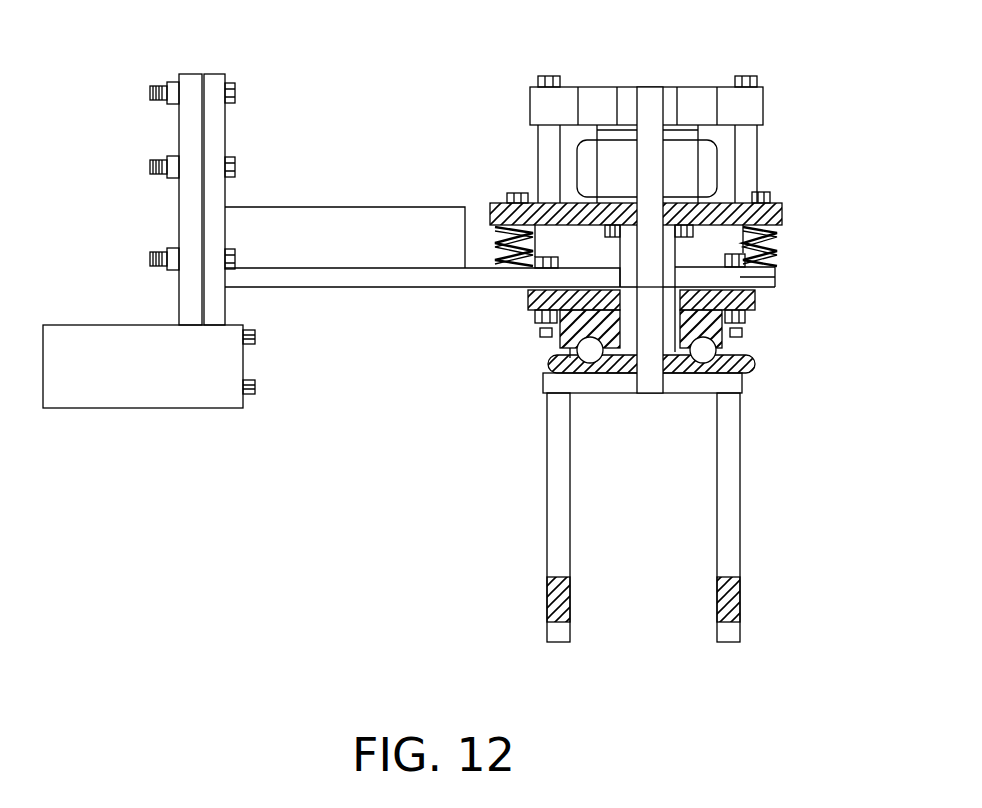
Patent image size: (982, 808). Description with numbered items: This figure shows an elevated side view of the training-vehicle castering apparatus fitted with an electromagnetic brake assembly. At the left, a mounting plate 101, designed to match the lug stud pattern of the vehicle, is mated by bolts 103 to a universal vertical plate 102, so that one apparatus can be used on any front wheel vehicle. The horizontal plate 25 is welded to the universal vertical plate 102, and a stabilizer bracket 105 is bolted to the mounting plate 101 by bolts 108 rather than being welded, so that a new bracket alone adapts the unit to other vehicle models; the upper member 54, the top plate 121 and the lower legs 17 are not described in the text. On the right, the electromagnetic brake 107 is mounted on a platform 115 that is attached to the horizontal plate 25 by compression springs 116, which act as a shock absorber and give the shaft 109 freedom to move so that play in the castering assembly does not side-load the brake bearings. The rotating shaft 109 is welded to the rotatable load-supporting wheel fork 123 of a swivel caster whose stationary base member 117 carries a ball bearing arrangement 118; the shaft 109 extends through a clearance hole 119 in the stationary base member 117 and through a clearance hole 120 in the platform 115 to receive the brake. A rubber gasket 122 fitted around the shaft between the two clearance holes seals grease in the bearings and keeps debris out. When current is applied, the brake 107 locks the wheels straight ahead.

The support legs 17 is at (545, 447).
The horizontal plate 25 is at (295, 290).
The arm beam 54 is at (292, 207).
The mounting plate 101 is at (192, 72).
The universal vertical plate 102 is at (213, 72).
The bolts 103 is at (237, 88).
The stabilizer bracket 105 is at (102, 412).
The electromagnetic brake 107 is at (587, 165).
The bolts 108 is at (260, 337).
The rotating shaft 109 is at (647, 395).
The platform 115 is at (783, 213).
The compression springs 116 is at (775, 248).
The stationary base member 117 is at (757, 295).
The ball bearing arrangement 118 is at (753, 367).
The clearance hole 119 is at (773, 277).
The clearance hole 120 is at (627, 293).
The top plate 121 is at (767, 105).
The rubber gasket 122 is at (527, 290).
The rotatable load-supporting wheel fork 123 is at (540, 368).